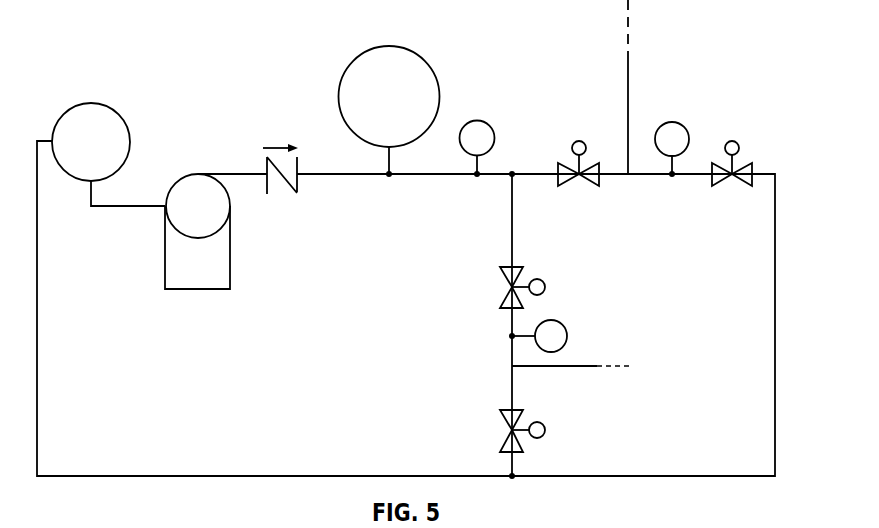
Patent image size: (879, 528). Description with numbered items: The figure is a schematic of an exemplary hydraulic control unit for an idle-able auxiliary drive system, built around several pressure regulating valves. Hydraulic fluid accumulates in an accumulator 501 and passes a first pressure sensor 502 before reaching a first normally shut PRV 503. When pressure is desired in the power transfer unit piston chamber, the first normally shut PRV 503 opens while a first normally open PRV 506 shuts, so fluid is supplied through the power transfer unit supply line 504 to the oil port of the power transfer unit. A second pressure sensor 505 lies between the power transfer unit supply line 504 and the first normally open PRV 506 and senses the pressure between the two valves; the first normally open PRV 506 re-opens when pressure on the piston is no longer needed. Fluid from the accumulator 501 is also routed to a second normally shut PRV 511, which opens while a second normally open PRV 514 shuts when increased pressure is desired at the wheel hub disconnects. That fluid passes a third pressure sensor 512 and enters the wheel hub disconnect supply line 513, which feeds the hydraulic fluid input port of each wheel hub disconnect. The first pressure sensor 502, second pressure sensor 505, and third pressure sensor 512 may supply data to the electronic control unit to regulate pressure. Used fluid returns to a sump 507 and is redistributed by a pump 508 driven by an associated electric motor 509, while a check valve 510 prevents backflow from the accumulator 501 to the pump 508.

The accumulator 501 is at (388, 45).
The first pressure sensor 502 is at (478, 122).
The first normally shut PRV 503 is at (579, 141).
The power transfer unit supply line 504 is at (629, 80).
The second pressure sensor 505 is at (673, 122).
The first normally open PRV 506 is at (733, 141).
The sump 507 is at (90, 103).
The pump 508 is at (197, 174).
The electric motor 509 is at (197, 290).
The check valve 510 is at (297, 188).
The second normally shut PRV 511 is at (546, 285).
The third pressure sensor 512 is at (568, 333).
The wheel hub disconnect supply line 513 is at (562, 366).
The second normally open PRV 514 is at (545, 430).